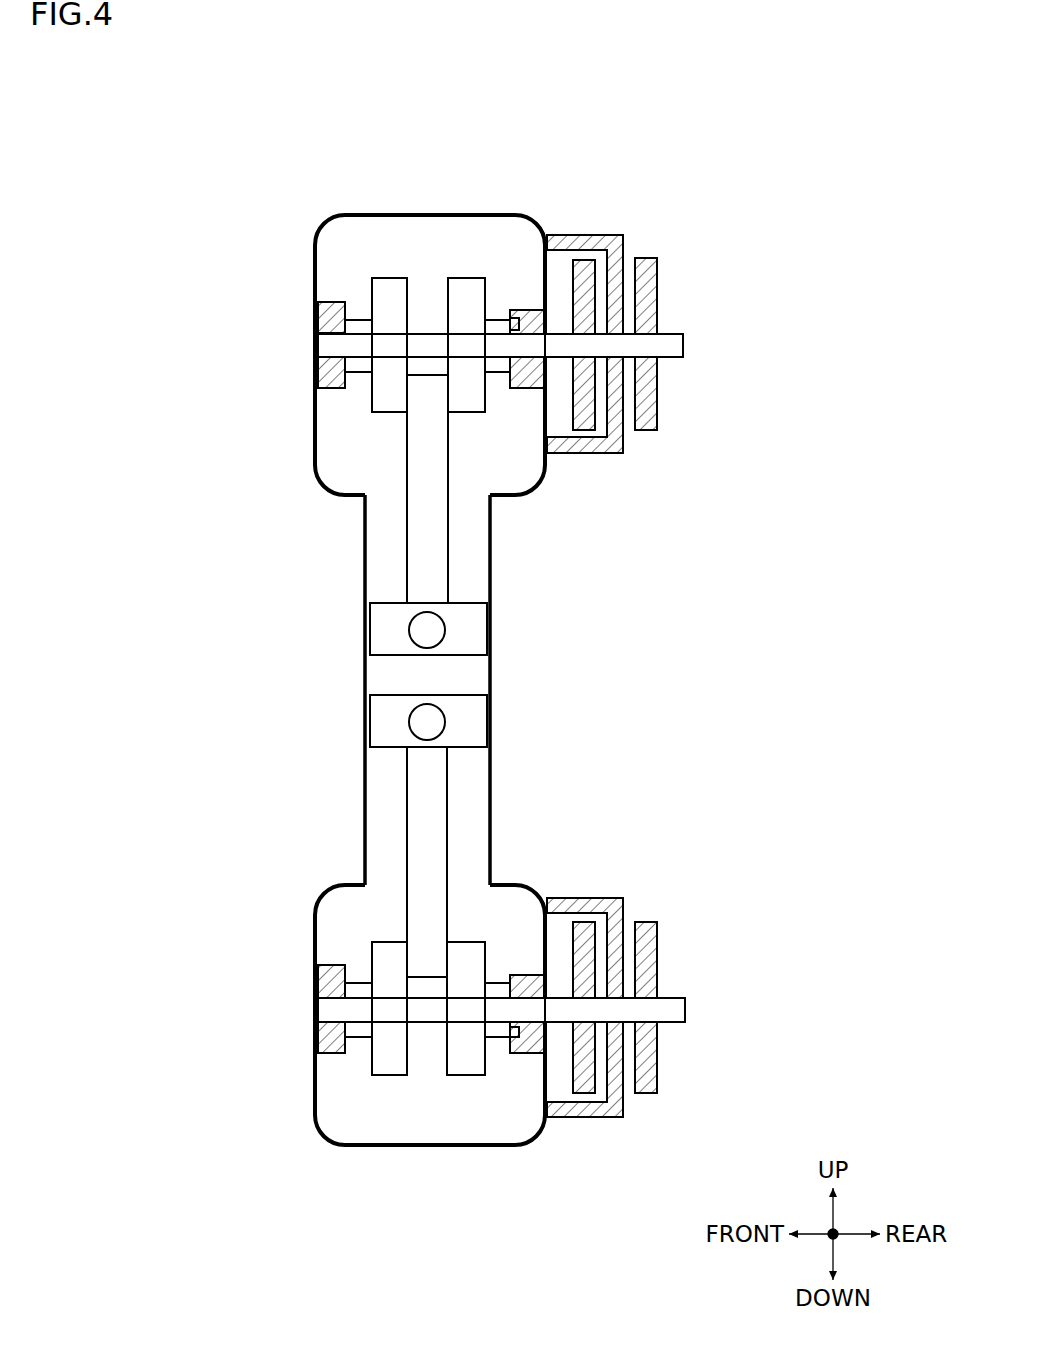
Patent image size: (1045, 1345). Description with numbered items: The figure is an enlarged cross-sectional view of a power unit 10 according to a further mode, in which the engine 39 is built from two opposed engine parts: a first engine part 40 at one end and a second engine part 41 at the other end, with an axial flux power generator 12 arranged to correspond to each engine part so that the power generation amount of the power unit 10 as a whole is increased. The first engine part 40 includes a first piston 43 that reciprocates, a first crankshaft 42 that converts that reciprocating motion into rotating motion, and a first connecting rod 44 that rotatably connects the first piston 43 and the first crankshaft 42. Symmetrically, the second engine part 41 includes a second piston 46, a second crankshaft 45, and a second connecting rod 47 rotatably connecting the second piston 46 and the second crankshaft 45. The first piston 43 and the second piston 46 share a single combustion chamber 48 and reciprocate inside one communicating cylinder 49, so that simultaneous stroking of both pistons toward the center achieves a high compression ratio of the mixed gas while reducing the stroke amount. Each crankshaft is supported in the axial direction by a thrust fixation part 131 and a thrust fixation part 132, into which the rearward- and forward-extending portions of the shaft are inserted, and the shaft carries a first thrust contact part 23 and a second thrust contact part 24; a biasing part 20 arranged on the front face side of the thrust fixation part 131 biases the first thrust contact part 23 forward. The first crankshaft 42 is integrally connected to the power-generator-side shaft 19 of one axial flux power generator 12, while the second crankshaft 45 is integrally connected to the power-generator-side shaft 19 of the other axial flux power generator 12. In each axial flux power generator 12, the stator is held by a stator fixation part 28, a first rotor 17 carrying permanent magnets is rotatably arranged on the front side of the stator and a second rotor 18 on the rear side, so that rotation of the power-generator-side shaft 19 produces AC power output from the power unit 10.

The power unit 10 is at (282, 115).
The axial flux power generator 12 is at (610, 678).
The first rotor 17 is at (585, 260).
The second rotor 18 is at (645, 258).
The power-generator-side shaft 19 is at (686, 334).
The biasing part 20 is at (513, 318).
The first thrust contact part 23 is at (500, 320).
The second thrust contact part 24 is at (356, 320).
The stator fixation part 28 is at (618, 235).
The engine 39 is at (430, 146).
The first engine part 40 is at (160, 717).
The second engine part 41 is at (158, 228).
The first crankshaft 42 is at (324, 1012).
The first piston 43 is at (460, 748).
The first connecting rod 44 is at (447, 867).
The second crankshaft 45 is at (328, 346).
The second piston 46 is at (465, 613).
The second connecting rod 47 is at (446, 550).
The combustion chamber 48 is at (385, 677).
The communicating cylinder 49 is at (365, 562).
The thrust fixation part 131 is at (331, 302).
The thrust fixation part 132 is at (528, 310).